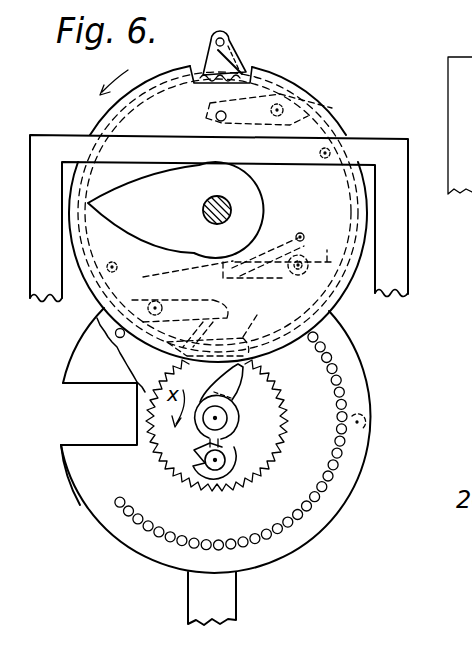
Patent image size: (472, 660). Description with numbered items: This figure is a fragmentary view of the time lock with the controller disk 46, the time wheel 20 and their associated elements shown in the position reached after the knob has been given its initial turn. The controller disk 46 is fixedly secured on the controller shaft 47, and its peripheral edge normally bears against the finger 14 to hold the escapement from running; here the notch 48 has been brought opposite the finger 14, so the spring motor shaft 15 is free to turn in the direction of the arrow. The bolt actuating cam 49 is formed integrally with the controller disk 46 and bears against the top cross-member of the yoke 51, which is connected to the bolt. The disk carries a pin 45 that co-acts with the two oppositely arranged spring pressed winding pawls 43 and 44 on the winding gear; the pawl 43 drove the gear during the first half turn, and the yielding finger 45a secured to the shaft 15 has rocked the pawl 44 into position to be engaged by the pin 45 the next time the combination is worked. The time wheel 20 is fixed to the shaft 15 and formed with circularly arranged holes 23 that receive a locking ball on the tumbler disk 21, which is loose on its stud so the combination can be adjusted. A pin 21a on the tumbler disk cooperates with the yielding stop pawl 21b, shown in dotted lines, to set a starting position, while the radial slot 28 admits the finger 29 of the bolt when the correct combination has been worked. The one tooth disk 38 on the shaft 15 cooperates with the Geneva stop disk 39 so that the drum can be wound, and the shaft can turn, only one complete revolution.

The finger 14 is at (236, 50).
The spring motor shaft 15 is at (242, 414).
The time wheel 20 is at (124, 533).
The tumbler disk 21 is at (88, 492).
The pin 21a is at (361, 430).
The yielding stop pawl 21b is at (223, 245).
The holes 23 is at (292, 522).
The radial slot 28 is at (77, 384).
The finger 29 is at (232, 604).
The one tooth disk 38 is at (238, 428).
The Geneva stop disk 39 is at (240, 463).
The winding pawl 43 is at (284, 90).
The winding pawl 44 is at (184, 300).
The pin 45 is at (216, 116).
The yielding finger 45a is at (227, 324).
The controller disk 46 is at (327, 120).
The controller shaft 47 is at (232, 210).
The notch 48 is at (258, 71).
The cam 49 is at (175, 210).
The yoke 51 is at (391, 289).